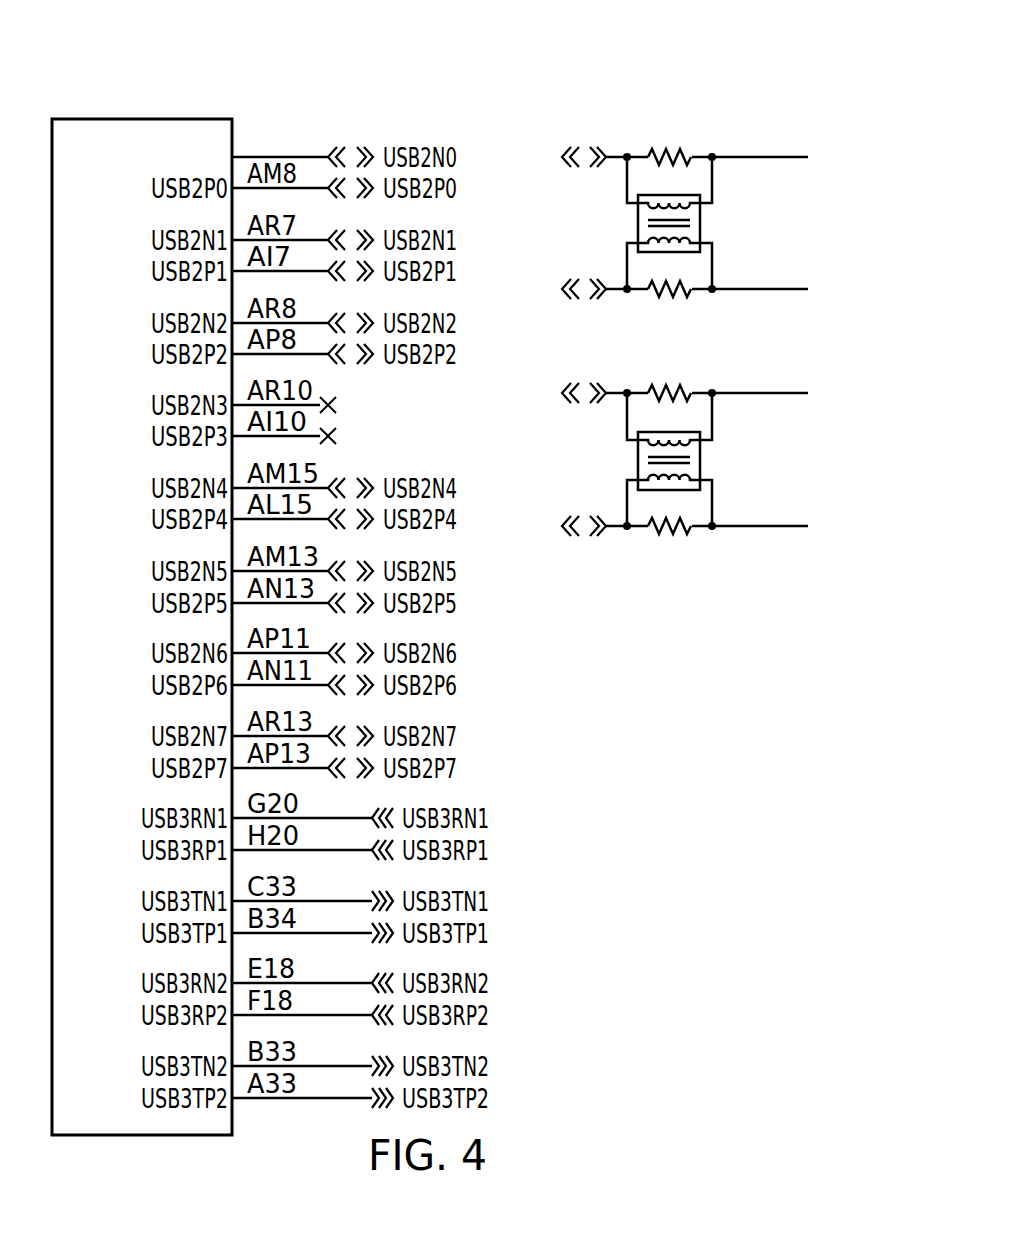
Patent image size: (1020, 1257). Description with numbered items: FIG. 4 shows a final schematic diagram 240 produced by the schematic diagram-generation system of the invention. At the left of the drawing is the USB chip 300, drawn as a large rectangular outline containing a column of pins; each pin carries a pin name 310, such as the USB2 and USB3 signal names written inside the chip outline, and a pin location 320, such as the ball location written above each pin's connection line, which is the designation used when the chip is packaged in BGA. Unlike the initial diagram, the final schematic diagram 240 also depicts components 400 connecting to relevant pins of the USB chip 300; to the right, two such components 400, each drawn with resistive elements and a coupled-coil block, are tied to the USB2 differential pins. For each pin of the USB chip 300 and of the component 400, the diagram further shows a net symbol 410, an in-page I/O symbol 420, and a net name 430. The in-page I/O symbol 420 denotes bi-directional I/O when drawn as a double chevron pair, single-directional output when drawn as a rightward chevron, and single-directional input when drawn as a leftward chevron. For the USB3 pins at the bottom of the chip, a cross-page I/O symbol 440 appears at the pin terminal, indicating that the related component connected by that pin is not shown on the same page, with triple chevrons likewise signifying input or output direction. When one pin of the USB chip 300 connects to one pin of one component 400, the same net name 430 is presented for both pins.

The final schematic diagram 240 is at (490, 65).
The USB chip 300 is at (112, 637).
The pin name 310 is at (146, 159).
The pin location 320 is at (272, 130).
The component 400 is at (679, 139).
The net symbol 410 is at (312, 150).
The in-page I/O symbol 420 is at (347, 140).
The net name 430 is at (419, 140).
The cross-page I/O symbol 440 is at (393, 812).